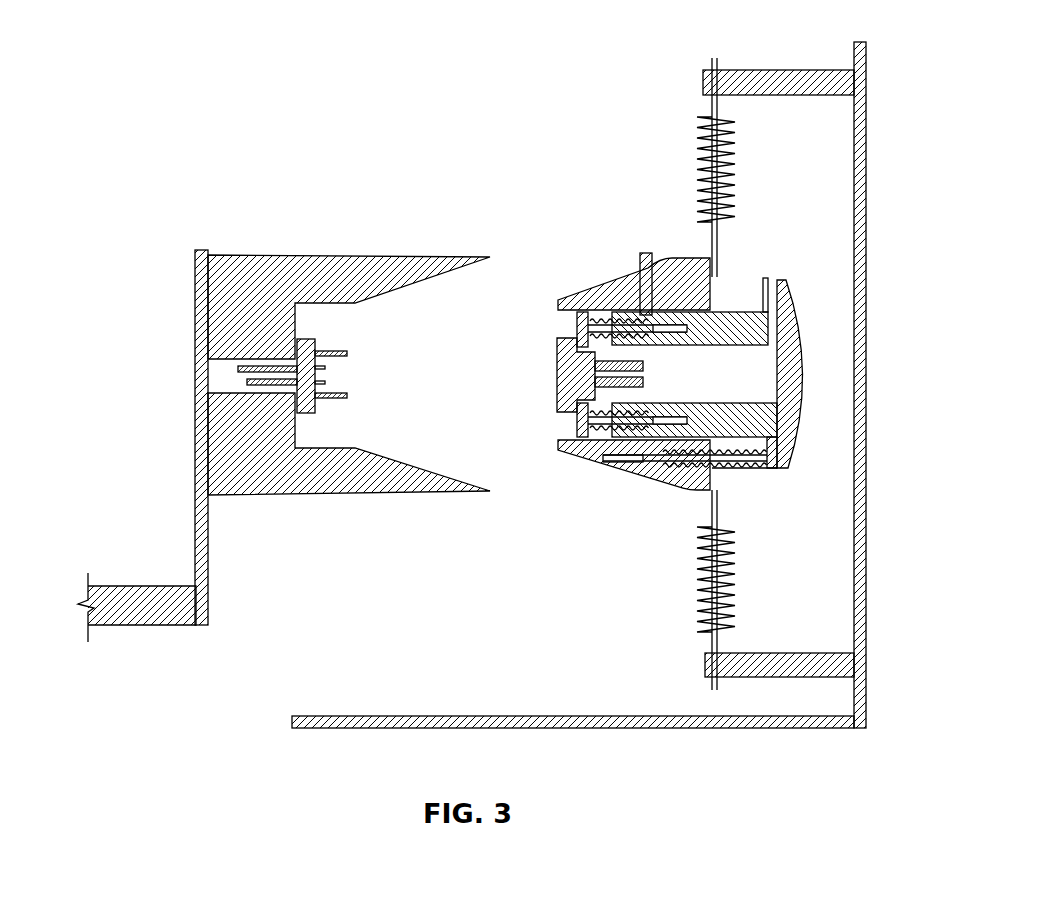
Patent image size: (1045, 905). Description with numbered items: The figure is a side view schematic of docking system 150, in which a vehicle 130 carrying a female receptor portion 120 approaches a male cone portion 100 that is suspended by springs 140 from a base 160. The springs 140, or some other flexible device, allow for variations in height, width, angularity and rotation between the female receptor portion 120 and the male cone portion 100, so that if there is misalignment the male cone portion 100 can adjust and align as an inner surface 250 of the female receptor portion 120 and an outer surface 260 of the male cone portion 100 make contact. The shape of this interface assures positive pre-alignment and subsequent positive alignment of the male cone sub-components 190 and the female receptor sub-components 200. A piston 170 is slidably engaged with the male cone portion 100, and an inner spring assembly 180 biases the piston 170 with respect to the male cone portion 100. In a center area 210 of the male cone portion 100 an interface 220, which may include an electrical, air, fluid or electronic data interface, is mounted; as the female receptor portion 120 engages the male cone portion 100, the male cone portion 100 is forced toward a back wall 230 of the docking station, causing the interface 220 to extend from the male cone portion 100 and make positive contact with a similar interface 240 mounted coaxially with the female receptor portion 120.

The male cone portion 100 is at (583, 248).
The female receptor portion 120 is at (280, 507).
The vehicle 130 is at (105, 583).
The springs 140 is at (740, 196).
The docking system 150 is at (141, 53).
The base 160 is at (612, 729).
The piston 170 is at (787, 322).
The inner spring assembly 180 is at (752, 470).
The male cone sub-components 190 is at (650, 372).
The female receptor sub-components 200 is at (318, 417).
The center area 210 is at (540, 338).
The interface 220 is at (557, 377).
The back wall 230 is at (867, 372).
The interface 240 is at (332, 382).
The inner surface 250 is at (452, 268).
The outer surface 260 is at (683, 272).